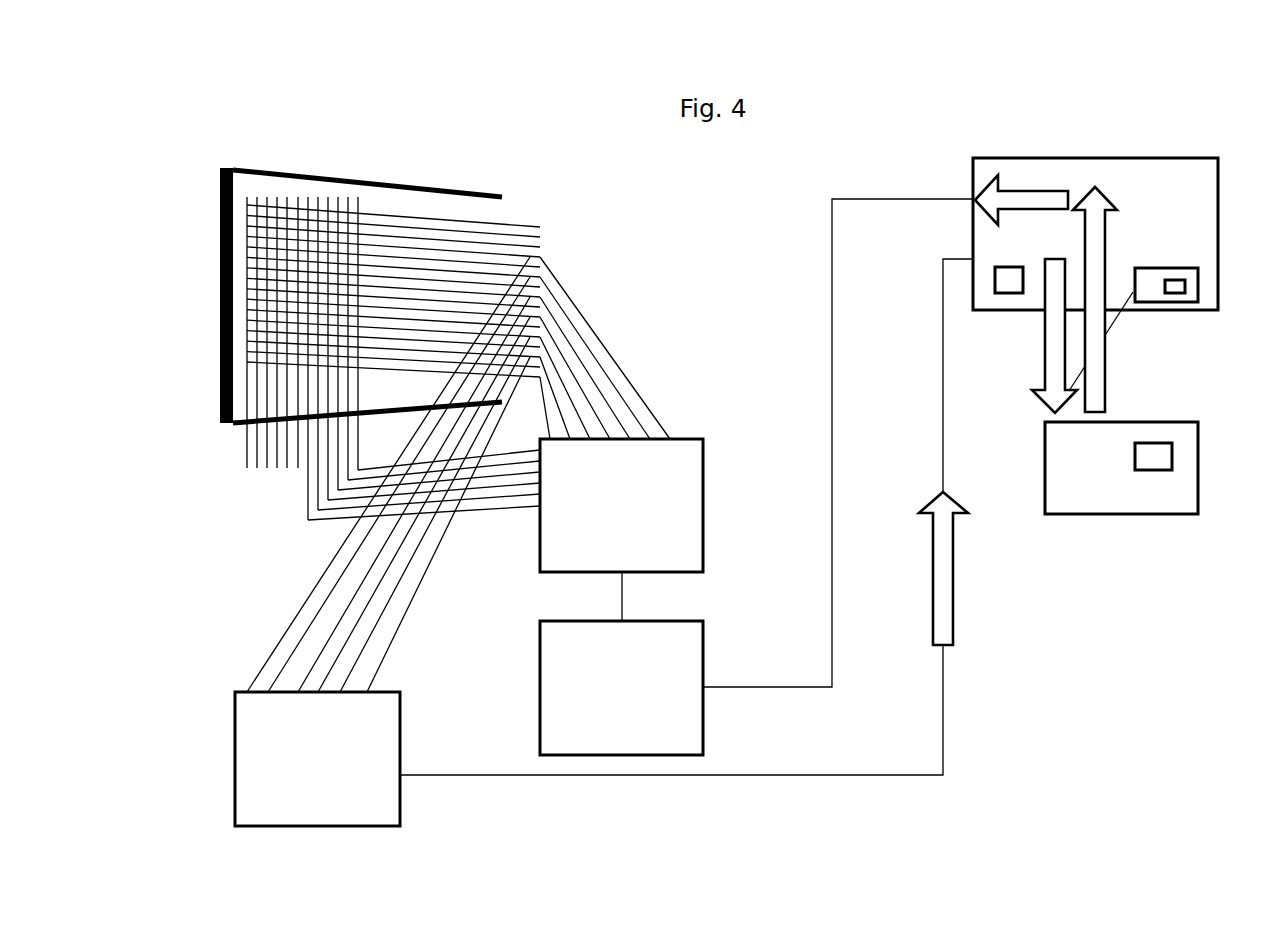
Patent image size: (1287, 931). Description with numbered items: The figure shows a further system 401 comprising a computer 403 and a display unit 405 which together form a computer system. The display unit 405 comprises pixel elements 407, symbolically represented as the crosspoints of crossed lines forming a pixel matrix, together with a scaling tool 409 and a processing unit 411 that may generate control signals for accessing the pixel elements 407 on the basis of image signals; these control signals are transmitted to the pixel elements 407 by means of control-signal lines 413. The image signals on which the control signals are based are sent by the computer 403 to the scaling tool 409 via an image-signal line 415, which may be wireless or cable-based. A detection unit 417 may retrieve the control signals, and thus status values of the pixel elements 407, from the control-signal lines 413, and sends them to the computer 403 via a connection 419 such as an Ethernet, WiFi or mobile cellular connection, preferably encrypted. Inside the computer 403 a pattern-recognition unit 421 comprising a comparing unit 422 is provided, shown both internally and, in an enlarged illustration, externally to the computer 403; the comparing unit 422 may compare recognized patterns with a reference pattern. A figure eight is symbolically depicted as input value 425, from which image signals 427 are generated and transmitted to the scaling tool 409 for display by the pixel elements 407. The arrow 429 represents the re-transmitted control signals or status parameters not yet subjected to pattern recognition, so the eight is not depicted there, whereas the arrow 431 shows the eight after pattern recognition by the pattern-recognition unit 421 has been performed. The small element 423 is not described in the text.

The system 401 is at (1201, 118).
The computer 403 is at (1095, 234).
The display unit 405 is at (362, 312).
The pixel elements 407 is at (320, 218).
The scaling tool 409 is at (621, 688).
The processing unit 411 is at (621, 530).
The control-signal lines 413 is at (583, 342).
The image-signal line 415 is at (832, 310).
The detection unit 417 is at (382, 541).
The connection 419 is at (943, 713).
The pattern-recognition unit 421 is at (1196, 270).
The comparing unit 422 is at (1186, 287).
The register 423 is at (1005, 294).
The input value 425 is at (290, 247).
The image signals 427 is at (1012, 190).
The arrow 429 is at (1045, 348).
The arrow 431 is at (1118, 355).